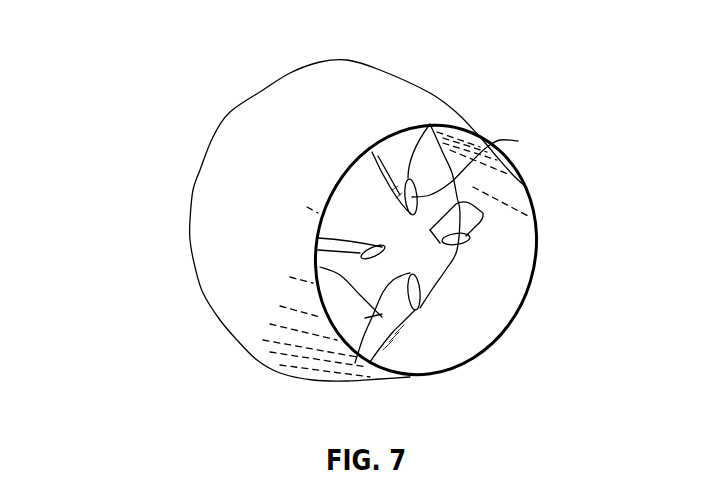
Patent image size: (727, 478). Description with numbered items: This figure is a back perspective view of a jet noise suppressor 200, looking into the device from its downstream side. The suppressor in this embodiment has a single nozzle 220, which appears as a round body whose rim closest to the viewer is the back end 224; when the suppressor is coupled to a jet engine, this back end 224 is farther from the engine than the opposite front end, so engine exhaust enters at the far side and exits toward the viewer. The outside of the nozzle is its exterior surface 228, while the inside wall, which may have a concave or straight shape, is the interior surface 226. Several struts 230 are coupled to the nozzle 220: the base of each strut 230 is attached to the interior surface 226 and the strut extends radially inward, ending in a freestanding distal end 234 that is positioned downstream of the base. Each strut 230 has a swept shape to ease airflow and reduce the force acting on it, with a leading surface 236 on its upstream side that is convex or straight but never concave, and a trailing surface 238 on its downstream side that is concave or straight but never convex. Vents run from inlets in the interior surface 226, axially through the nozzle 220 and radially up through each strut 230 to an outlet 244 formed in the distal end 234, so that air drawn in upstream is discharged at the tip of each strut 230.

The jet noise suppressor 200 is at (125, 55).
The nozzle 220 is at (243, 127).
The back end 224 is at (500, 333).
The interior surface 226 is at (502, 292).
The exterior surface 228 is at (208, 208).
The strut 230 is at (380, 147).
The distal end 234 is at (435, 126).
The leading surface 236 is at (317, 259).
The trailing surface 238 is at (410, 317).
The outlet 244 is at (468, 244).